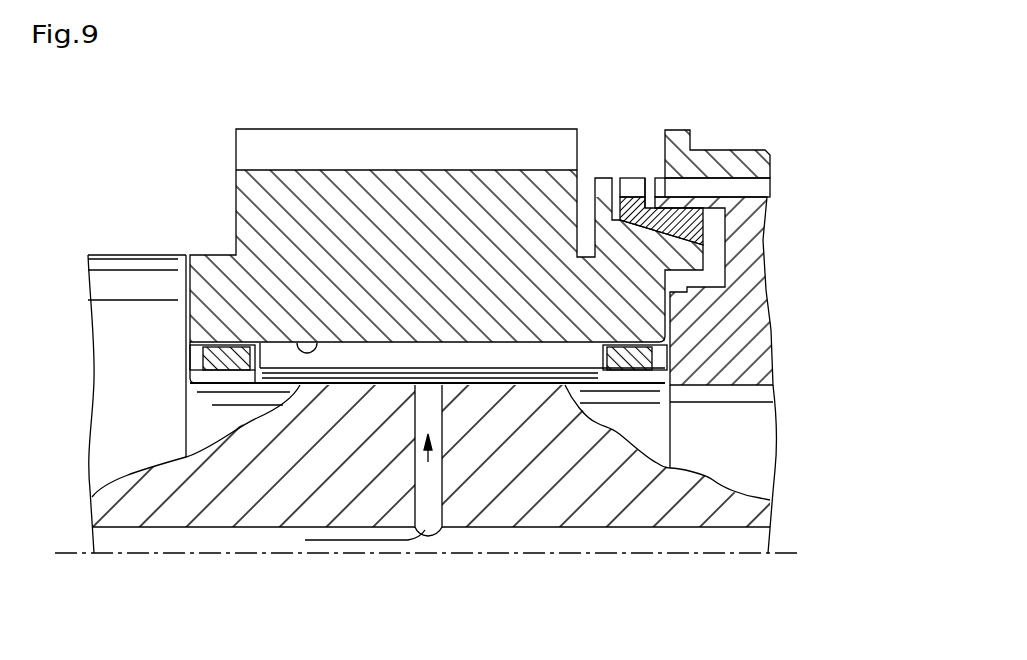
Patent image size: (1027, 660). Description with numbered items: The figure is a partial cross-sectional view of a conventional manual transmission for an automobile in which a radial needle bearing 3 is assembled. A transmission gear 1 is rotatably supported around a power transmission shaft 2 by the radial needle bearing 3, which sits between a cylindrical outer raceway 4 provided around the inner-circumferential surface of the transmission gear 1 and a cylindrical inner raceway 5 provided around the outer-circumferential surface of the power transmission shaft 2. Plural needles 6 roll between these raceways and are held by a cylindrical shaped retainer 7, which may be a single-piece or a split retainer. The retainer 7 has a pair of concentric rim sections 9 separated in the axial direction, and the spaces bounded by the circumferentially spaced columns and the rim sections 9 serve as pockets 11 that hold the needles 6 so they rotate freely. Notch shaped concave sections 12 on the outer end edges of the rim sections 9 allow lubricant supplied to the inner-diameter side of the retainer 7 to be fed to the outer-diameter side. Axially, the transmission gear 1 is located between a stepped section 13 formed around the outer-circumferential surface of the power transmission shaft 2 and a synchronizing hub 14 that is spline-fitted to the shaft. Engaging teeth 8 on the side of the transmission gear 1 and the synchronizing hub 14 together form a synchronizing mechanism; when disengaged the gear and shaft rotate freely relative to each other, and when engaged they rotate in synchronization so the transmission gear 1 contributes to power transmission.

The transmission gear 1 is at (365, 196).
The power transmission shaft 2 is at (110, 420).
The radial needle bearing 3 is at (410, 360).
The cylindrical outer raceway 4 is at (314, 343).
The cylindrical inner raceway 5 is at (347, 374).
The needles 6 is at (483, 357).
The retainer 7 is at (615, 362).
The engaging teeth 8 is at (604, 192).
The rim sections 9 is at (228, 352).
The pockets 11 is at (256, 358).
The notch shaped concave sections 12 is at (197, 362).
The stepped section 13 is at (196, 292).
The synchronizing hub 14 is at (745, 313).